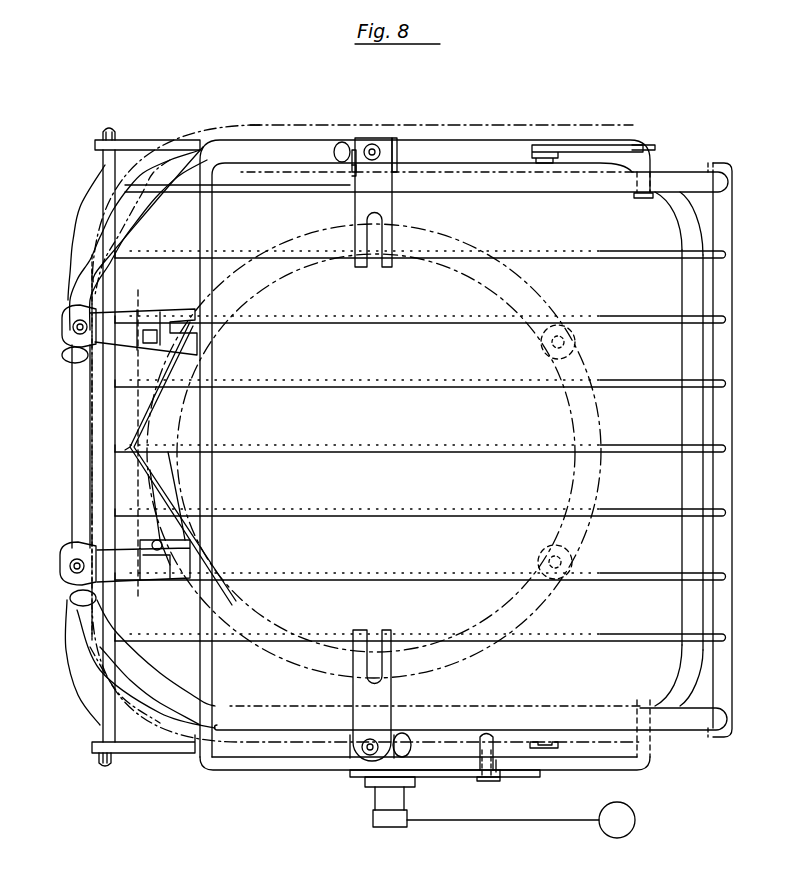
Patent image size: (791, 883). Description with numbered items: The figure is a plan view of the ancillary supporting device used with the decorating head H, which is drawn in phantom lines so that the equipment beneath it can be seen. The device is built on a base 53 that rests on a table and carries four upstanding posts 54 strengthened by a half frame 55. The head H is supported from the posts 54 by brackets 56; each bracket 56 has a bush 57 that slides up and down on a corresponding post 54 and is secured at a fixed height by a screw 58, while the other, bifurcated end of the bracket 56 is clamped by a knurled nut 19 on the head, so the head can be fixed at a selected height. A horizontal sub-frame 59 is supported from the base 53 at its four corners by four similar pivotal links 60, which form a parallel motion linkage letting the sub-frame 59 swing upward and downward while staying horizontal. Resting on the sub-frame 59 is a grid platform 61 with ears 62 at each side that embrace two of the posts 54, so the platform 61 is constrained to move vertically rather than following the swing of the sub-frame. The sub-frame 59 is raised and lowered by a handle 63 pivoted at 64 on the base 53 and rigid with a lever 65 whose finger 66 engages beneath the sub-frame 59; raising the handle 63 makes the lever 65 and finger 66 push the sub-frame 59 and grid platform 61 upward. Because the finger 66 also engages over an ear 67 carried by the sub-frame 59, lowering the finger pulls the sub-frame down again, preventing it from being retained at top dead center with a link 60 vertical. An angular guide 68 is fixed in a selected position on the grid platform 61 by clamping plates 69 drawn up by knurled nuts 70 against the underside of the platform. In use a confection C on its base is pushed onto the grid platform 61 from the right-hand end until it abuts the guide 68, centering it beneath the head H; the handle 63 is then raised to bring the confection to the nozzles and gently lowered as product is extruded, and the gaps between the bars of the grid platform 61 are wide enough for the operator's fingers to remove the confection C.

The knurled nut 19 is at (405, 232).
The base 53 is at (129, 664).
The upstanding post 54 is at (392, 140).
The half frame 55 is at (123, 393).
The bracket 56 is at (350, 210).
The bush 57 is at (378, 140).
The screw 58 is at (345, 142).
The horizontal sub-frame 59 is at (540, 132).
The pivotal link 60 is at (148, 140).
The grid platform 61 is at (662, 185).
The ear 62 is at (314, 193).
The handle 63 is at (552, 820).
The pivot 64 is at (380, 832).
The lever 65 is at (452, 790).
The finger 66 is at (500, 735).
The ear 67 is at (522, 775).
The angular guide 68 is at (420, 446).
The clamping plate 69 is at (168, 312).
The knurled nut 70 is at (177, 463).
The decorating head H is at (545, 300).
The confection C is at (580, 347).